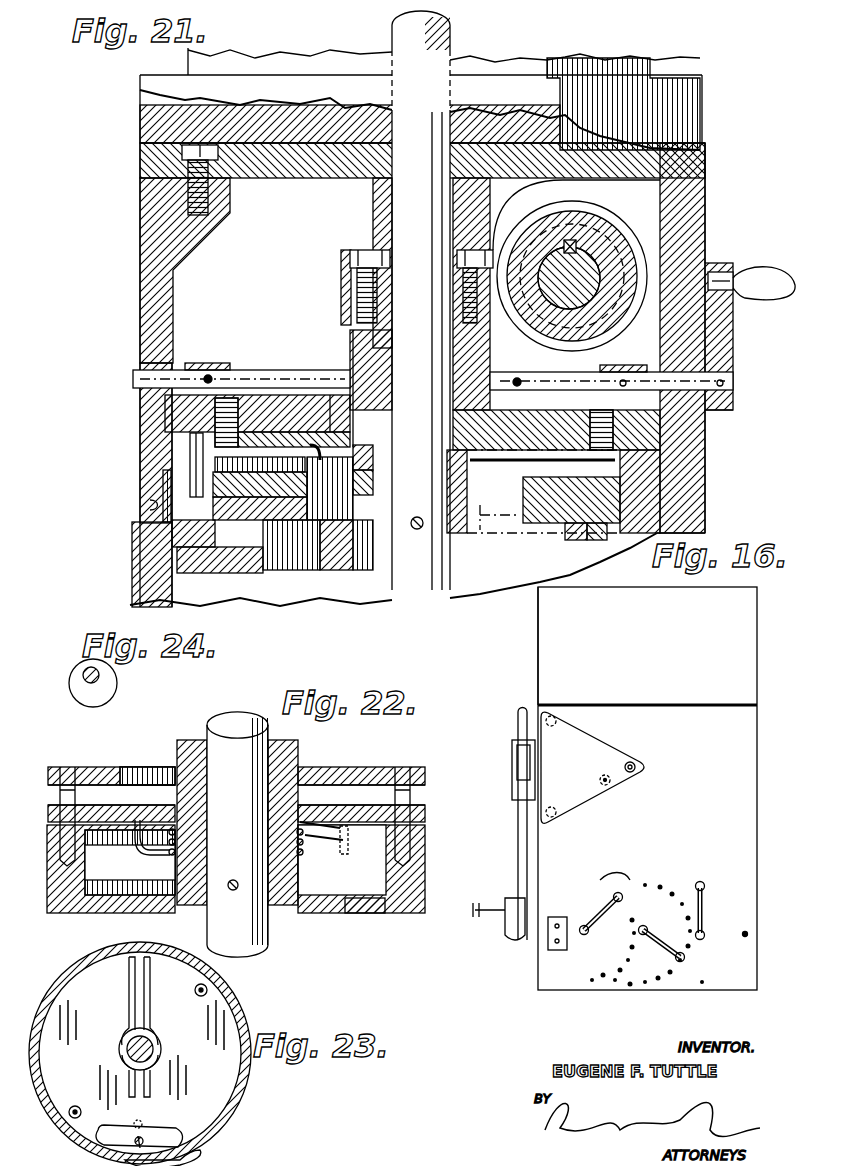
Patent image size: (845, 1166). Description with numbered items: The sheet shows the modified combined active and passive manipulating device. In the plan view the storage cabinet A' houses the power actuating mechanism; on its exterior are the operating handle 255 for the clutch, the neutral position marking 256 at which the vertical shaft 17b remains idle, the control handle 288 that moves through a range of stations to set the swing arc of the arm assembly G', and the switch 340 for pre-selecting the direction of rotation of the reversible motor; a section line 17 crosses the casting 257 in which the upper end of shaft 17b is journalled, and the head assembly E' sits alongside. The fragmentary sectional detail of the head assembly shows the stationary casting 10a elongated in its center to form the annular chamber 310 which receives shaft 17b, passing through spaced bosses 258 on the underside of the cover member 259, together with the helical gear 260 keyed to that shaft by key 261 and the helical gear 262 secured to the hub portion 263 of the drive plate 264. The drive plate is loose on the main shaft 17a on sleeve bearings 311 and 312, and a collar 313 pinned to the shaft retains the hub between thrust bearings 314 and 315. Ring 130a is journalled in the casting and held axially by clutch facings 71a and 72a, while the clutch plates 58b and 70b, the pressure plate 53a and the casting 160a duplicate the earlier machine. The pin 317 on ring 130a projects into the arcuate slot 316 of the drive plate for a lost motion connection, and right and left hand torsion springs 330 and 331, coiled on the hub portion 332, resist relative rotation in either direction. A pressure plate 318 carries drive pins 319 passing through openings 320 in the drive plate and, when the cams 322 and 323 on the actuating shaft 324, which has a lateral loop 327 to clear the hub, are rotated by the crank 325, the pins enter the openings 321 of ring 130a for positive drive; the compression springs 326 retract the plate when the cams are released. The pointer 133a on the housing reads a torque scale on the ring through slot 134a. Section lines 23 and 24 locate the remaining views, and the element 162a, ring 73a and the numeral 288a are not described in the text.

In FIG. 21, the main shaft 17a is at (397, 38).
In FIG. 22, the main shaft 17a is at (268, 930).
In FIG. 23, the main shaft 17a is at (130, 1045).
In FIG. 21, the casting 160a is at (505, 70).
In FIG. 21, the cover plate wall 162a is at (700, 135).
In FIG. 21, the cover member 259 is at (298, 178).
In FIG. 21, the thrust bearing 315 is at (372, 250).
In FIG. 21, the helical gear 262 is at (345, 240).
In FIG. 21, the hub portion 263 is at (357, 306).
In FIG. 21, the key 261 is at (565, 248).
In FIG. 21, the bosses 258 is at (612, 215).
In FIG. 21, the vertically extending shaft 17b is at (580, 266).
In FIG. 16, the vertically extending shaft 17b is at (608, 776).
In FIG. 21, the helical gear 260 is at (700, 252).
In FIG. 21, the head assembly E' is at (750, 262).
In FIG. 16, the head assembly E' is at (505, 805).
In FIG. 21, the sleeve bearing 311 is at (355, 370).
In FIG. 21, the crank 325 is at (733, 330).
In FIG. 21, the annular chamber 310 is at (668, 328).
In FIG. 21, the actuating shaft 324 is at (265, 363).
In FIG. 24, the actuating shaft 324 is at (97, 676).
In FIG. 21, the cam 322 is at (205, 366).
In FIG. 21, the pressure plate 318 is at (235, 398).
In FIG. 22, the pressure plate 318 is at (384, 773).
In FIG. 21, the lateral loop 327 is at (342, 382).
In FIG. 21, the drive pins 319 is at (335, 395).
In FIG. 22, the drive pins 319 is at (62, 805).
In FIG. 23, the drive pins 319 is at (208, 988).
In FIG. 21, the cam 323 is at (606, 365).
In FIG. 24, the cam 323 is at (90, 692).
In FIG. 21, the section line 24— 24 is at (565, 358).
In FIG. 21, the compression springs 326 is at (592, 422).
In FIG. 21, the drive plate 264 is at (348, 425).
In FIG. 22, the drive plate 264 is at (285, 768).
In FIG. 23, the drive plate 264 is at (220, 1012).
In FIG. 21, the torsion spring 330 is at (345, 452).
In FIG. 22, the torsion spring 330 is at (292, 850).
In FIG. 23, the torsion spring 330 is at (150, 990).
In FIG. 21, the hub portion 332 is at (370, 452).
In FIG. 21, the torsion spring 331 is at (372, 475).
In FIG. 22, the torsion spring 331 is at (296, 862).
In FIG. 23, the torsion spring 331 is at (130, 990).
In FIG. 21, the thrust bearing 314 is at (378, 495).
In FIG. 21, the collar 313 is at (380, 512).
In FIG. 23, the collar 313 is at (152, 1038).
In FIG. 21, the arcuate slot 316 is at (198, 432).
In FIG. 23, the arcuate slot 316 is at (158, 1131).
In FIG. 21, the sleeve bearing 312 is at (460, 455).
In FIG. 21, the pin 317 is at (190, 485).
In FIG. 23, the pin 317 is at (182, 1160).
In FIG. 21, the slot 134a is at (148, 508).
In FIG. 21, the indicator pointer 133a is at (132, 528).
In FIG. 21, the pressure plate 53a is at (196, 547).
In FIG. 21, the annular ring 130a is at (205, 565).
In FIG. 22, the annular ring 130a is at (388, 918).
In FIG. 21, the sleeve 73a is at (252, 550).
In FIG. 22, the sleeve 73a is at (364, 915).
In FIG. 21, the clutch facing 72a is at (295, 560).
In FIG. 21, the clutch plate 70b is at (330, 560).
In FIG. 21, the clutch facing 71a is at (575, 540).
In FIG. 21, the clutch plate 58b is at (600, 540).
In FIG. 21, the stationary casting 10a is at (706, 504).
In FIG. 21, the section line 23— 23 is at (120, 450).
In FIG. 16, the storage cabinet A' is at (507, 646).
In FIG. 16, the casting 257 is at (592, 790).
In FIG. 16, the section line 17— 17 is at (600, 790).
In FIG. 16, the link 288a is at (630, 885).
In FIG. 16, the control handle 288 is at (598, 918).
In FIG. 16, the operating handle 255 is at (706, 912).
In FIG. 16, the neutral position 256 is at (748, 934).
In FIG. 16, the switch 340 is at (557, 950).
In FIG. 16, the arm assembly G' is at (499, 944).
In FIG. 22, the openings 321 is at (50, 838).
In FIG. 22, the openings 320 is at (90, 805).
In FIG. 23, the openings 320 is at (68, 1112).